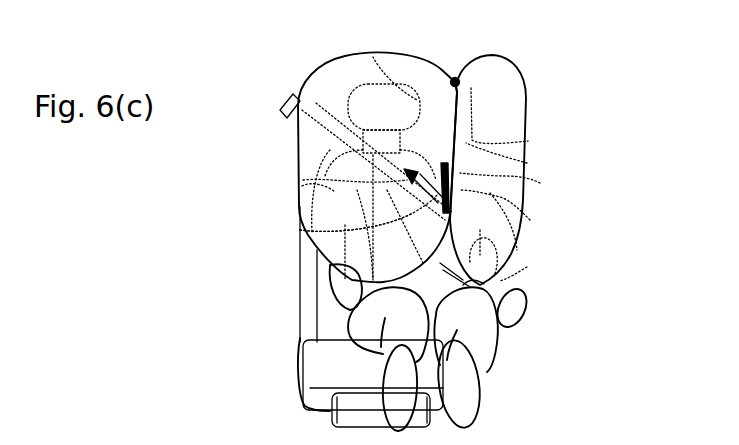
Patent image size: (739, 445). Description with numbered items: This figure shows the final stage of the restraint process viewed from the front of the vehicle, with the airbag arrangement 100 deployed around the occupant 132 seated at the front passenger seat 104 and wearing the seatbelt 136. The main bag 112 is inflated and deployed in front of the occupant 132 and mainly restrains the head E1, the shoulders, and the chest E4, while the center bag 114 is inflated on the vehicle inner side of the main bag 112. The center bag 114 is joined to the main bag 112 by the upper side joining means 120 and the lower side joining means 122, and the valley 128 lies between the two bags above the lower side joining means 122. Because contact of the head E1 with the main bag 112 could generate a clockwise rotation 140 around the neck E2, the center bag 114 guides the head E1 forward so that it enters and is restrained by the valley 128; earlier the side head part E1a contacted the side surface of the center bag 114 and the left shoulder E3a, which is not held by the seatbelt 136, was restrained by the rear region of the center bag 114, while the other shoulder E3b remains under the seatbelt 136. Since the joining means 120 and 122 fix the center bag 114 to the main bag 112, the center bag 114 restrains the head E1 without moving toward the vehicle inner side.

The airbag device 100 is at (268, 121).
The front passenger seat 104 is at (299, 347).
The main bag 112 is at (330, 200).
The center bag 114 is at (528, 99).
The upper side joining means 120 is at (462, 80).
The lower side joining means 122 is at (463, 285).
The valley 128 is at (527, 163).
The occupant 132 is at (380, 58).
The seatbelt 136 is at (297, 110).
The rotation 140 is at (307, 230).
The head E1 is at (452, 76).
The side head part E1a is at (528, 141).
The neck E2 is at (540, 183).
The left shoulder E3a is at (530, 220).
The region E3b is at (302, 186).
The chest E4 is at (527, 267).